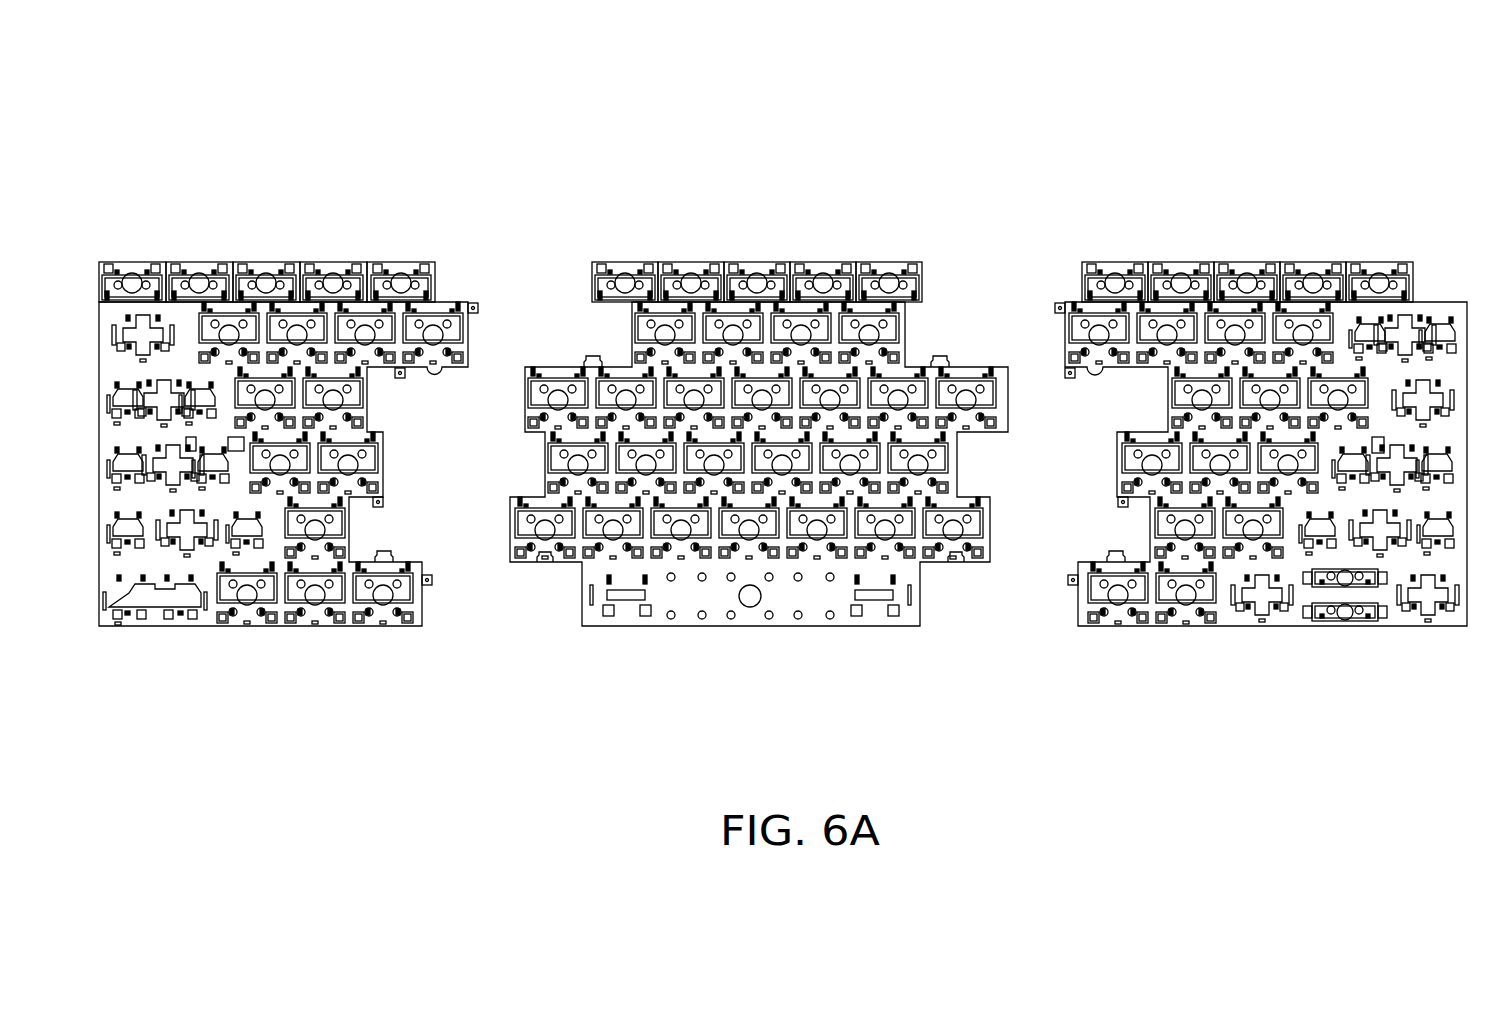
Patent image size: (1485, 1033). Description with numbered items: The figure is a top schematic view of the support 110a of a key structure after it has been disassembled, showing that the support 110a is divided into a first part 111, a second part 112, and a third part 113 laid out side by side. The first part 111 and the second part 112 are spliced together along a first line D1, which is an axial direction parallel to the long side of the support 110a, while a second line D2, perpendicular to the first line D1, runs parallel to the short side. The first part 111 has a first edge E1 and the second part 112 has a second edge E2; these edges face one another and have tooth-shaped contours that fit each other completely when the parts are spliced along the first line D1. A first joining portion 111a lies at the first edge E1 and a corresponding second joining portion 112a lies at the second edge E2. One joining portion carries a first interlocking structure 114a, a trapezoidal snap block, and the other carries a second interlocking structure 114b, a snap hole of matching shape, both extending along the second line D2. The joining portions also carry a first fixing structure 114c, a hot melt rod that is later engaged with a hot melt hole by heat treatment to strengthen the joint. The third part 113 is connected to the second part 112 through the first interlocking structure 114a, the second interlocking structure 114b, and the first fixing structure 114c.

The first part 111 is at (213, 615).
The second part 112 is at (760, 613).
The third part 113 is at (1250, 615).
The first interlocking structure 114a is at (384, 552).
The second interlocking structure 114b is at (435, 364).
The first fixing structure 114c is at (480, 308).
The first edge E1 is at (422, 604).
The second edge E2 is at (582, 594).
The support 110a is at (525, 37).
The first joining portion 111a is at (705, 37).
The second joining portion 112a is at (883, 37).
The first line D1 is at (154, 157).
The second line D2 is at (154, 157).